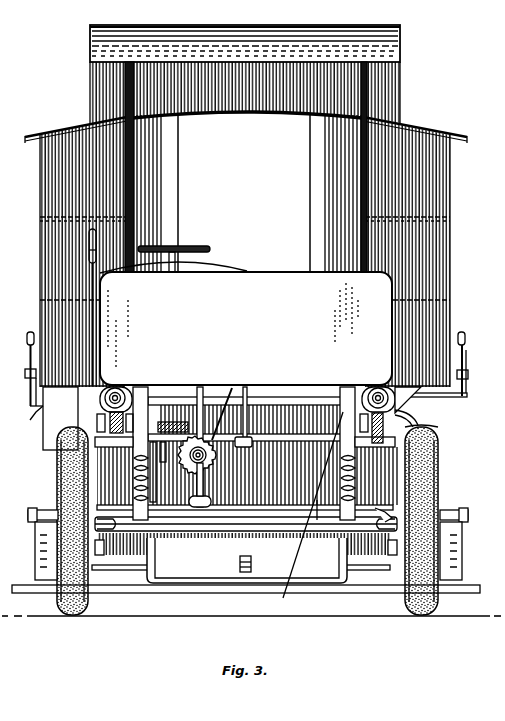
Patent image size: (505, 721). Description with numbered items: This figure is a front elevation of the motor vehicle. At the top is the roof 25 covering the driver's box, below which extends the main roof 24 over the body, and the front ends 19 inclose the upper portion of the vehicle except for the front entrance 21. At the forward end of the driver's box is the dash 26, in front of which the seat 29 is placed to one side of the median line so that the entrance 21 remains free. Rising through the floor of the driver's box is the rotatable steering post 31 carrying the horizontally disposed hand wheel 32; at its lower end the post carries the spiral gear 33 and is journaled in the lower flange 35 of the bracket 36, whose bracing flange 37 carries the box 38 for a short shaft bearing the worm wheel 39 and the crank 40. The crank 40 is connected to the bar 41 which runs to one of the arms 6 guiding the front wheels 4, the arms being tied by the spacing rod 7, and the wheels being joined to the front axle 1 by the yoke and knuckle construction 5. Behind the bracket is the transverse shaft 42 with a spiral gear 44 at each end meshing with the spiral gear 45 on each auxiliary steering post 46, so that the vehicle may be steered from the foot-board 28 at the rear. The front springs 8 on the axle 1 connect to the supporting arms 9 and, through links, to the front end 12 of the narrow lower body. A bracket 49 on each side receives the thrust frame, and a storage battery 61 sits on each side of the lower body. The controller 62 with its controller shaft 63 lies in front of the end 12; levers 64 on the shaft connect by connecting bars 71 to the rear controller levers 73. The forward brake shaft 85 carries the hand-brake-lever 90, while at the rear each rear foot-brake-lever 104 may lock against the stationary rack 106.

The front axle 1 is at (265, 531).
The front wheels 4 is at (67, 492).
The yoke and knuckle construction 5 is at (100, 555).
The arms 6 is at (383, 514).
The spacing rod 7 is at (197, 520).
The front springs 8 is at (245, 478).
The forward supporting arms 9 is at (244, 453).
The front end 12 is at (237, 545).
The front ends 19 is at (48, 261).
The front entrance 21 is at (246, 168).
The main roof 24 is at (249, 117).
The roof 25 is at (236, 34).
The dash 26 is at (246, 328).
The foot-board 28 is at (322, 587).
The seat 29 is at (232, 268).
The steering post 31 is at (169, 268).
The hand wheel 32 is at (190, 247).
The spiral gear 33 is at (177, 421).
The lower flange 35 is at (170, 476).
The bracket 36 is at (234, 388).
The bracing flange 37 is at (203, 406).
The box 38 is at (216, 456).
The worm wheel 39 is at (203, 440).
The crank 40 is at (194, 480).
The bar 41 is at (310, 523).
The shaft 42 is at (390, 430).
The spiral gear 44 is at (437, 433).
The spiral gear 45 is at (374, 391).
The auxiliary steering post 46 is at (120, 390).
The bracket 49 is at (407, 400).
The storage battery 61 is at (103, 462).
The controller 62 is at (60, 418).
The controller shaft 63 is at (38, 410).
The levers 64 is at (30, 389).
The connecting bar 71 is at (25, 374).
The rear controller lever 73 is at (29, 350).
The forward brake shaft 85 is at (295, 492).
The hand-brake-lever 90 is at (94, 323).
The rear foot-brake-lever 104 is at (40, 542).
The stationary rack 106 is at (45, 559).